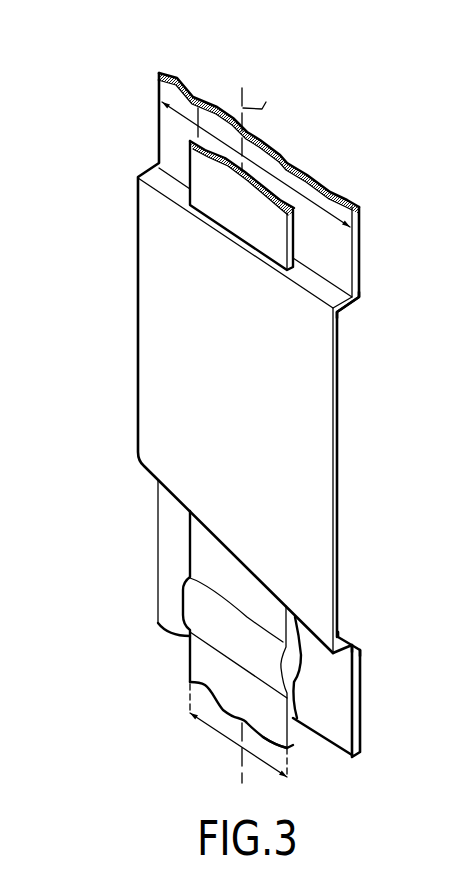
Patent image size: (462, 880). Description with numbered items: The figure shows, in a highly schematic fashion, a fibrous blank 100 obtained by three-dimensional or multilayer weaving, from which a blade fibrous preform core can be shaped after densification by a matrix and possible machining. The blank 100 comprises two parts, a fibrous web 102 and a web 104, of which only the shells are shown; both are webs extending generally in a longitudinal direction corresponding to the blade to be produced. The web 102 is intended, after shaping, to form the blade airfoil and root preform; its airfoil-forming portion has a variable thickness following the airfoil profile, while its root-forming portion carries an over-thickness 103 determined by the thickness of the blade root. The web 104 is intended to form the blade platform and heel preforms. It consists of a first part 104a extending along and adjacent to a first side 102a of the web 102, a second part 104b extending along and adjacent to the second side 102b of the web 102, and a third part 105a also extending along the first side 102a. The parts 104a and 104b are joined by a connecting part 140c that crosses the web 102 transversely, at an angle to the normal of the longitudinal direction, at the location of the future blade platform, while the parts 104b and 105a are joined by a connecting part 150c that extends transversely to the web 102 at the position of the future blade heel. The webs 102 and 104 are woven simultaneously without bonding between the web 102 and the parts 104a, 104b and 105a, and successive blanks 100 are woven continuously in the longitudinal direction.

The fibrous blank 100 is at (261, 428).
The fibrous web 102 is at (216, 630).
The first side of the web 102a is at (296, 735).
The second side of the web 102b is at (212, 670).
The over-thickness 103 is at (287, 672).
The web 104 is at (261, 415).
The first part of the web 104a is at (358, 680).
The second part of the web 104b is at (337, 445).
The third part of the web 105a is at (357, 272).
The connecting part 140c is at (343, 640).
The connecting part 150c is at (355, 305).